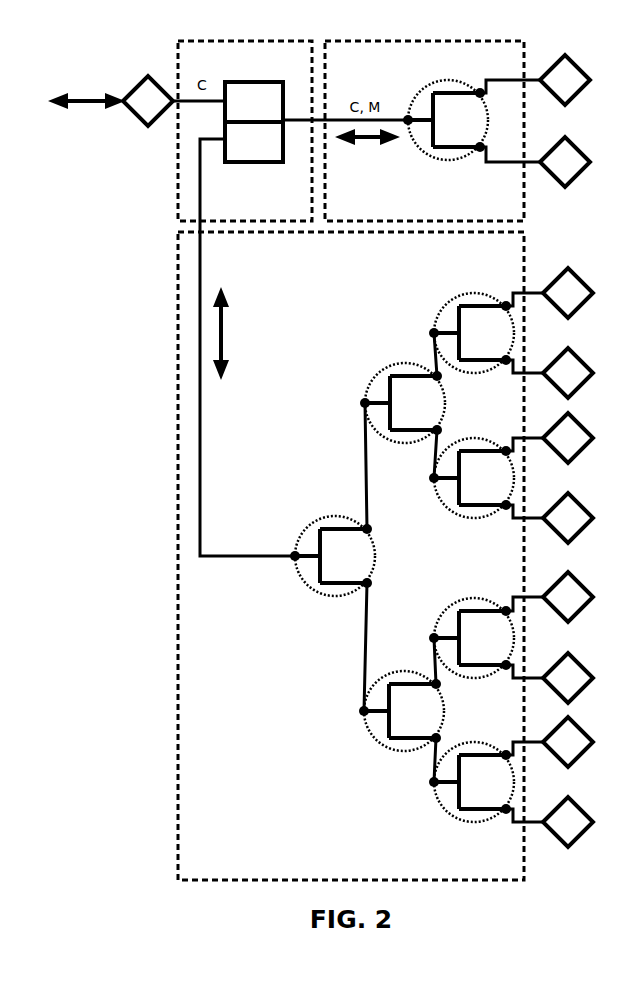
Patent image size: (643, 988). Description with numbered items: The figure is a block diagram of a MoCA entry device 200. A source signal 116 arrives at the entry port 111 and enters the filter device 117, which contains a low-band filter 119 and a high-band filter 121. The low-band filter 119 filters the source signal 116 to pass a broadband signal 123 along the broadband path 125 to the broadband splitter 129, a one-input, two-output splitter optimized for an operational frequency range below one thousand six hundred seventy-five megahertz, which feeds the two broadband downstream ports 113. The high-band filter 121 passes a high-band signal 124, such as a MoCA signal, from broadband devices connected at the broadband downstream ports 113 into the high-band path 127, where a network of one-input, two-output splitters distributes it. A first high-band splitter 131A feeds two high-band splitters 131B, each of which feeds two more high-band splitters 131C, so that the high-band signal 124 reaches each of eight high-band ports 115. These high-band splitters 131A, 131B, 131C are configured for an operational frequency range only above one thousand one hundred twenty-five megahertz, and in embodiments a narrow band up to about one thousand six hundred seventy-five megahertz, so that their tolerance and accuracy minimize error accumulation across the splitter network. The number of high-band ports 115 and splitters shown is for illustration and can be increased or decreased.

The MoCA entry device 200 is at (540, 52).
The source signal 116 is at (97, 99).
The entry port 111 is at (148, 101).
The filter device 117 is at (245, 131).
The low-band filter 119 is at (254, 102).
The high-band filter 121 is at (254, 142).
The broadband path 125 is at (424, 131).
The broadband splitter 129 is at (426, 92).
The broadband signal 123 is at (382, 146).
The broadband downstream ports 113 is at (565, 121).
The high-band signal 124 is at (228, 317).
The high-band path 127 is at (351, 556).
The first high-band splitter 131A is at (318, 595).
The high-band splitter 131B is at (386, 367).
The high-band splitter 131C is at (455, 298).
The high-band ports 115 is at (568, 557).